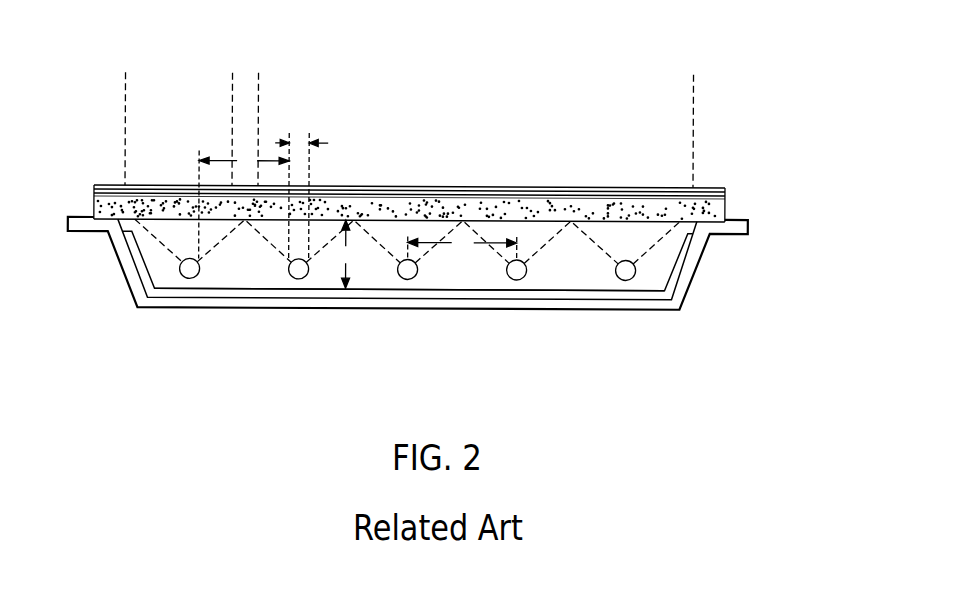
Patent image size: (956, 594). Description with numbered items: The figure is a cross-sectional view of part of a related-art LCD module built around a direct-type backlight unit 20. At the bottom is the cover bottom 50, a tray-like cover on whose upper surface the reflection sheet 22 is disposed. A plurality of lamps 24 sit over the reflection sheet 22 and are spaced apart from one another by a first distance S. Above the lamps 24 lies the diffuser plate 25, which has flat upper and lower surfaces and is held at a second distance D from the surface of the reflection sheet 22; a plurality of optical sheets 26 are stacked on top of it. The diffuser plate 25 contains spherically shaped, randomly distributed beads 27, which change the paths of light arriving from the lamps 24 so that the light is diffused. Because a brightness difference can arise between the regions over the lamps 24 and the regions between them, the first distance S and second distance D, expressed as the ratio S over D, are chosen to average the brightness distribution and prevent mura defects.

The direct-type backlight unit 20 is at (438, 211).
The reflection sheet 22 is at (513, 288).
The lamps 24 is at (624, 278).
The diffuser plate 25 is at (452, 166).
The optical sheets 26 is at (727, 184).
The beads 27 is at (541, 203).
The cover bottom 50 is at (662, 301).